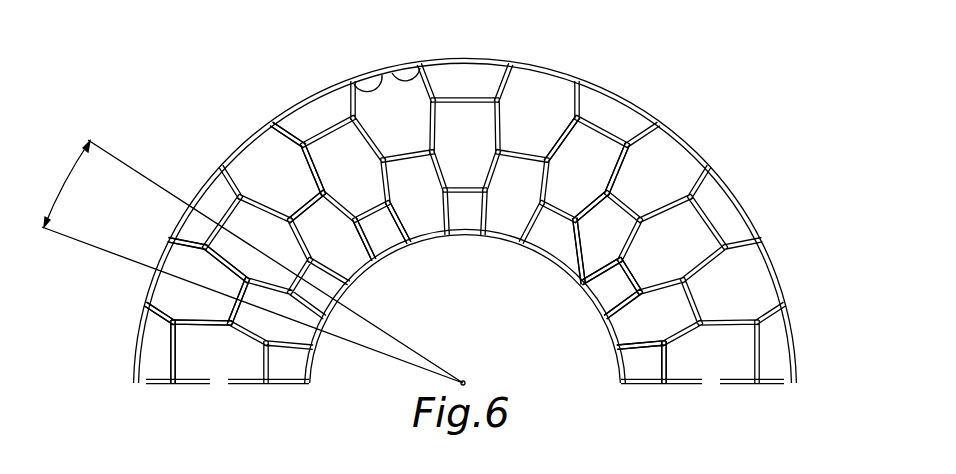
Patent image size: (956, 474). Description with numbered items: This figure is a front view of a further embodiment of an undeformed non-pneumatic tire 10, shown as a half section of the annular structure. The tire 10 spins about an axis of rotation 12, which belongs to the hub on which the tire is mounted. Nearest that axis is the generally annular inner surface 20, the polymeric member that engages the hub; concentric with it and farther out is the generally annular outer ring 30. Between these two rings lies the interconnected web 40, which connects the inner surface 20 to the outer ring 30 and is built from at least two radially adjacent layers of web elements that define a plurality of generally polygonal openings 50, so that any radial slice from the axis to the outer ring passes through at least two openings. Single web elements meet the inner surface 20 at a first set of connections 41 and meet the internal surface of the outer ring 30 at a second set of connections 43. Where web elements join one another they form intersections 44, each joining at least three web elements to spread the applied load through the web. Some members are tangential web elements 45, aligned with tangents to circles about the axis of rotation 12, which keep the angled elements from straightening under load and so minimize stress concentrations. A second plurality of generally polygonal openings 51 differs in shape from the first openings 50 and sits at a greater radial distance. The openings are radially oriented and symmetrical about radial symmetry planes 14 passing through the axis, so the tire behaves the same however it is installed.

The non-pneumatic tire 10 is at (441, 197).
The axis of rotation 12 is at (466, 382).
The radial symmetry planes 14 is at (252, 261).
The generally annular inner surface 20 is at (372, 257).
The generally annular outer ring 30 is at (706, 165).
The interconnected web 40 is at (703, 290).
The first set of connections 41 is at (400, 237).
The second set of connections 43 is at (392, 71).
The intersections 44 is at (356, 231).
The tangential web elements 45 is at (612, 132).
The generally polygonal openings 50 is at (625, 357).
The second plurality of generally polygonal openings 51 is at (153, 363).